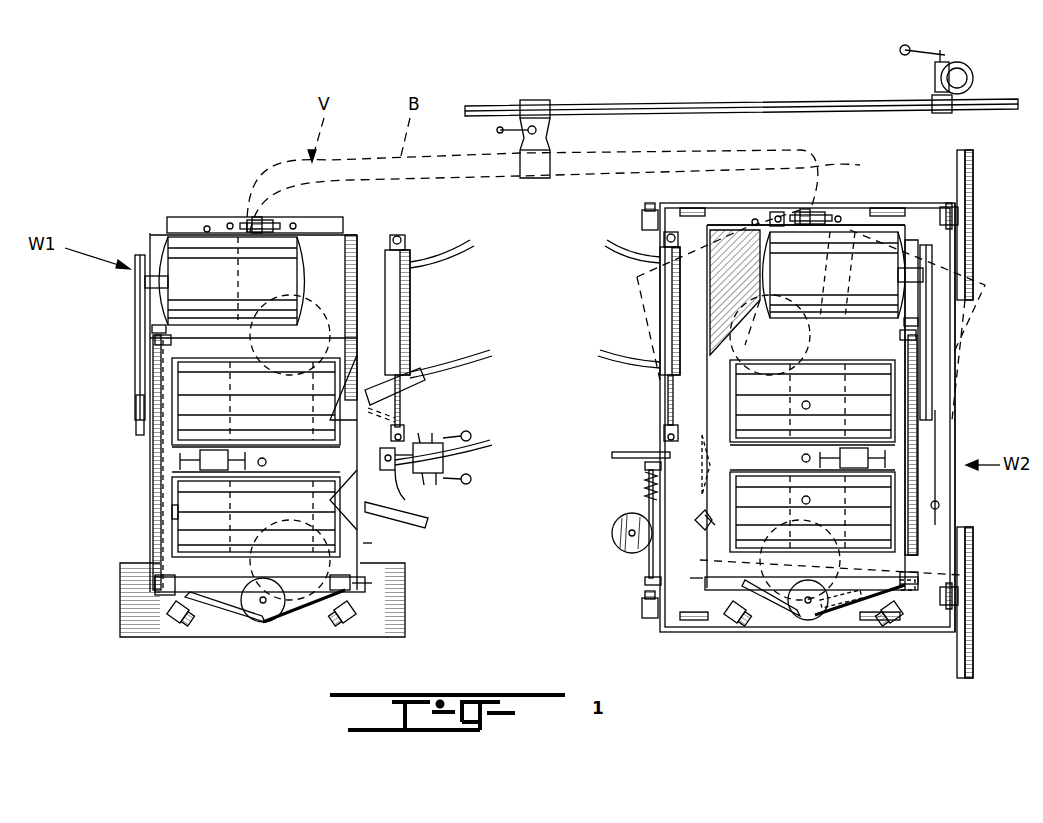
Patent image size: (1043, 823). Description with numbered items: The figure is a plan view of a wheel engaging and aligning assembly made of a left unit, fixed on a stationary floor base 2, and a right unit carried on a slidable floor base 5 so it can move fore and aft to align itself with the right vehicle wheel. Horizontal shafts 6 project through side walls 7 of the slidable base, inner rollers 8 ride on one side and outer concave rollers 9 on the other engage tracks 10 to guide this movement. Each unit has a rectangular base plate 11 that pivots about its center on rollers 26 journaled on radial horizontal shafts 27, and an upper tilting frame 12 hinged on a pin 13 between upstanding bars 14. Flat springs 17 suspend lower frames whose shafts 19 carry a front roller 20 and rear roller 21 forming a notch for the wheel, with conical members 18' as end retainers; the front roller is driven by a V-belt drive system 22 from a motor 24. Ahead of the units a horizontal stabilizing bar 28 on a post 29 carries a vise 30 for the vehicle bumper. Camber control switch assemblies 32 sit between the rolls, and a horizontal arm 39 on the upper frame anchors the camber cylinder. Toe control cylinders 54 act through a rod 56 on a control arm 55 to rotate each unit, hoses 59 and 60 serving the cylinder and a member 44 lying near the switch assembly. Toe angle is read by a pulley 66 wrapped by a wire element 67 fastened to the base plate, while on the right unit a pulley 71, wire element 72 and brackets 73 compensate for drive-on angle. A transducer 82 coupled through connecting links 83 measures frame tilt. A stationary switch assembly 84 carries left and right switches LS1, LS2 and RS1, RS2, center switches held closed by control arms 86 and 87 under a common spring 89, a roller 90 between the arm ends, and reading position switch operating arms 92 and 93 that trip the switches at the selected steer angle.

The stationary floor base 2 is at (180, 217).
The slidable floor base 5 is at (872, 210).
The horizontal shafts 6 is at (960, 213).
The side walls 7 is at (955, 380).
The inner rollers 8 is at (645, 205).
The outer concave rollers 9 is at (952, 222).
The tracks 10 is at (973, 170).
The base plate 11 is at (352, 235).
The upper tilting frame 12 is at (160, 565).
The pin 13 is at (160, 329).
The bars 14 is at (158, 341).
The flat springs 17 is at (150, 383).
The conical members 18' is at (559, 467).
The shafts 19 is at (138, 405).
The front roller 20 is at (185, 368).
The rear roller 21 is at (190, 525).
The V-belt drive system 22 is at (138, 310).
The motor 24 is at (178, 250).
The rollers 26 is at (252, 218).
The horizontal shafts 27 is at (265, 220).
The horizontal stabilizing bar 28 is at (733, 104).
The post 29 is at (965, 68).
The vise 30 is at (548, 148).
The camber control switch assemblies 32 is at (178, 457).
The horizontal arm 39 is at (645, 488).
The actuating arm 44 is at (490, 442).
The toe control cylinders 54 is at (418, 280).
The control arm 55 is at (398, 428).
The rod 56 is at (400, 390).
The hydraulic hose 59 is at (440, 252).
The hydraulic hose 60 is at (492, 352).
The pulley 66 is at (265, 622).
The wire element 67 is at (235, 618).
The pulley 71 is at (612, 533).
The wire element 72 is at (649, 506).
The brackets 73 is at (645, 466).
The transducer 82 is at (305, 607).
The connecting links 83 is at (352, 585).
The switch assembly 84 is at (460, 465).
The control arm 86 is at (471, 478).
The control arm 87 is at (470, 434).
The common spring 89 is at (413, 490).
The roller 90 is at (395, 386).
The reading position switch operating arm 92 is at (430, 525).
The reading position switch operating arm 93 is at (412, 400).
The right memory relay control switch RS1 is at (420, 443).
The right memory relay control switch RS2 is at (432, 443).
The left memory relay control switch LS1 is at (424, 480).
The left memory relay control switch LS2 is at (436, 480).